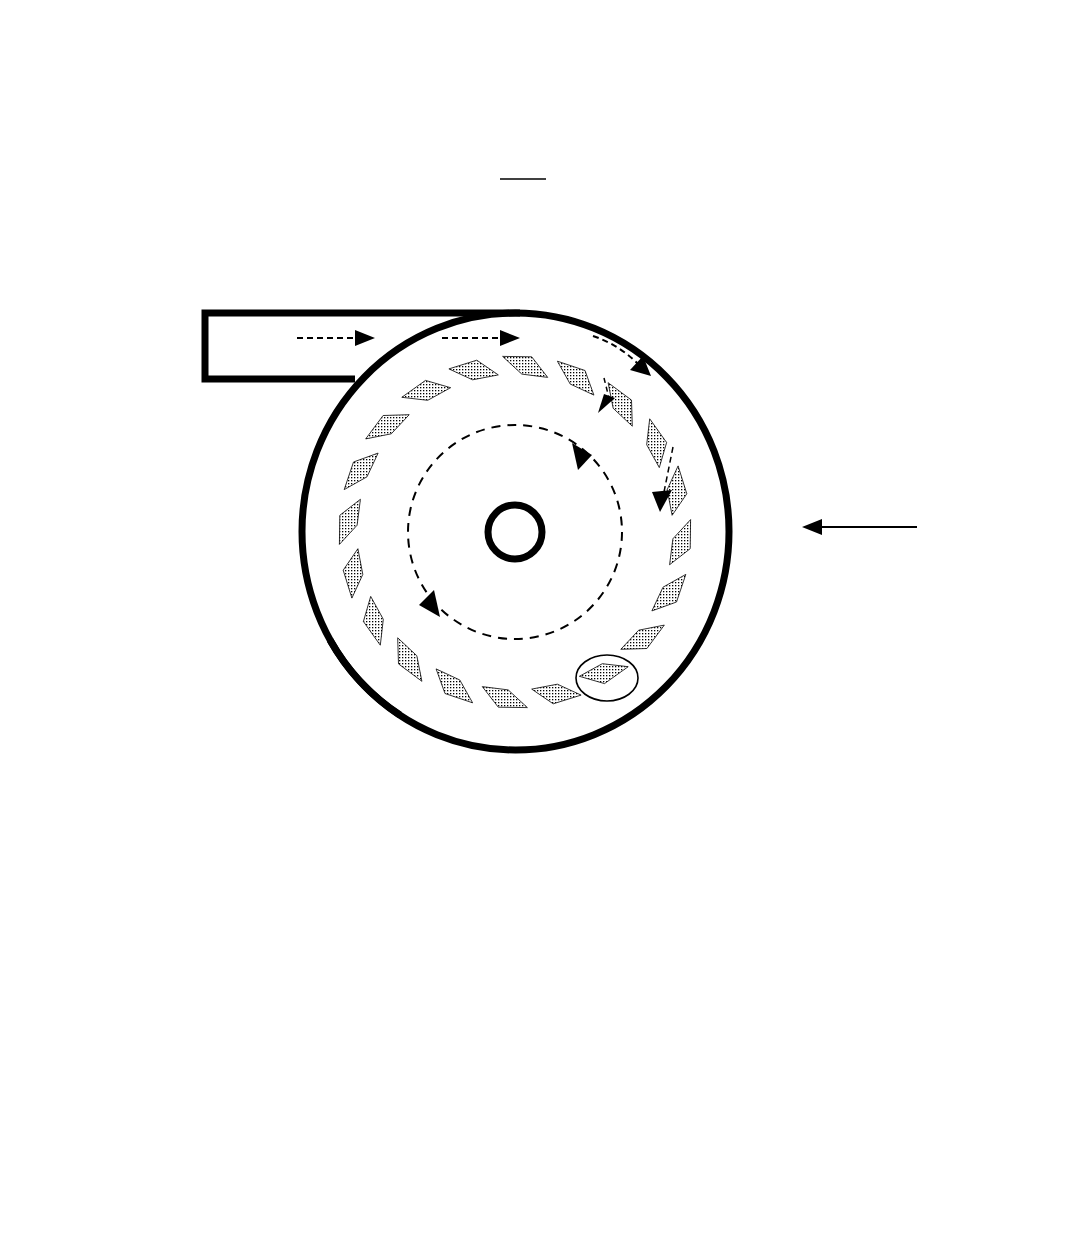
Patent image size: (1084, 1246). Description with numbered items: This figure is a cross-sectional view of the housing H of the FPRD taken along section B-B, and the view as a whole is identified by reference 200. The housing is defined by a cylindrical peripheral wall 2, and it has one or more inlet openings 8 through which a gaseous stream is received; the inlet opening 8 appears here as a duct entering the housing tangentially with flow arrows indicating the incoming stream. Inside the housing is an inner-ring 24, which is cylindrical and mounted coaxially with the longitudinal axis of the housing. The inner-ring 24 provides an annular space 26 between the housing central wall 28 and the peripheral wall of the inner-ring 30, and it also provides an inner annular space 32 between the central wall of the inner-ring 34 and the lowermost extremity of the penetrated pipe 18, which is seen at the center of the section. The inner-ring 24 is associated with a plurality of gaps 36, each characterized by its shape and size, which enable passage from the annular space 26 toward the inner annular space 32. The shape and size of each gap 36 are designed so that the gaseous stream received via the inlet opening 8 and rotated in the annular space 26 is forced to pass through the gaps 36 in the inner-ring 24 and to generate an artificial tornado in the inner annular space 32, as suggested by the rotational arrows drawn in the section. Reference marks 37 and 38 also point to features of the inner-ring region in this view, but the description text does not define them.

The fan assembly 200 is at (840, 127).
The cylindrical peripheral wall 2 is at (637, 717).
The inlet opening 8 is at (164, 337).
The penetrated pipe 18 is at (524, 560).
The inner-ring 24 is at (336, 587).
The annular space 26 is at (365, 657).
The housing central wall 28 is at (300, 532).
The peripheral wall of the inner-ring 30 is at (365, 615).
The inner annular space 32 is at (510, 657).
The central wall of the inner-ring 34 is at (355, 490).
The gaps 36 is at (467, 702).
The blade 37 is at (540, 358).
The blade detail 38 is at (640, 678).